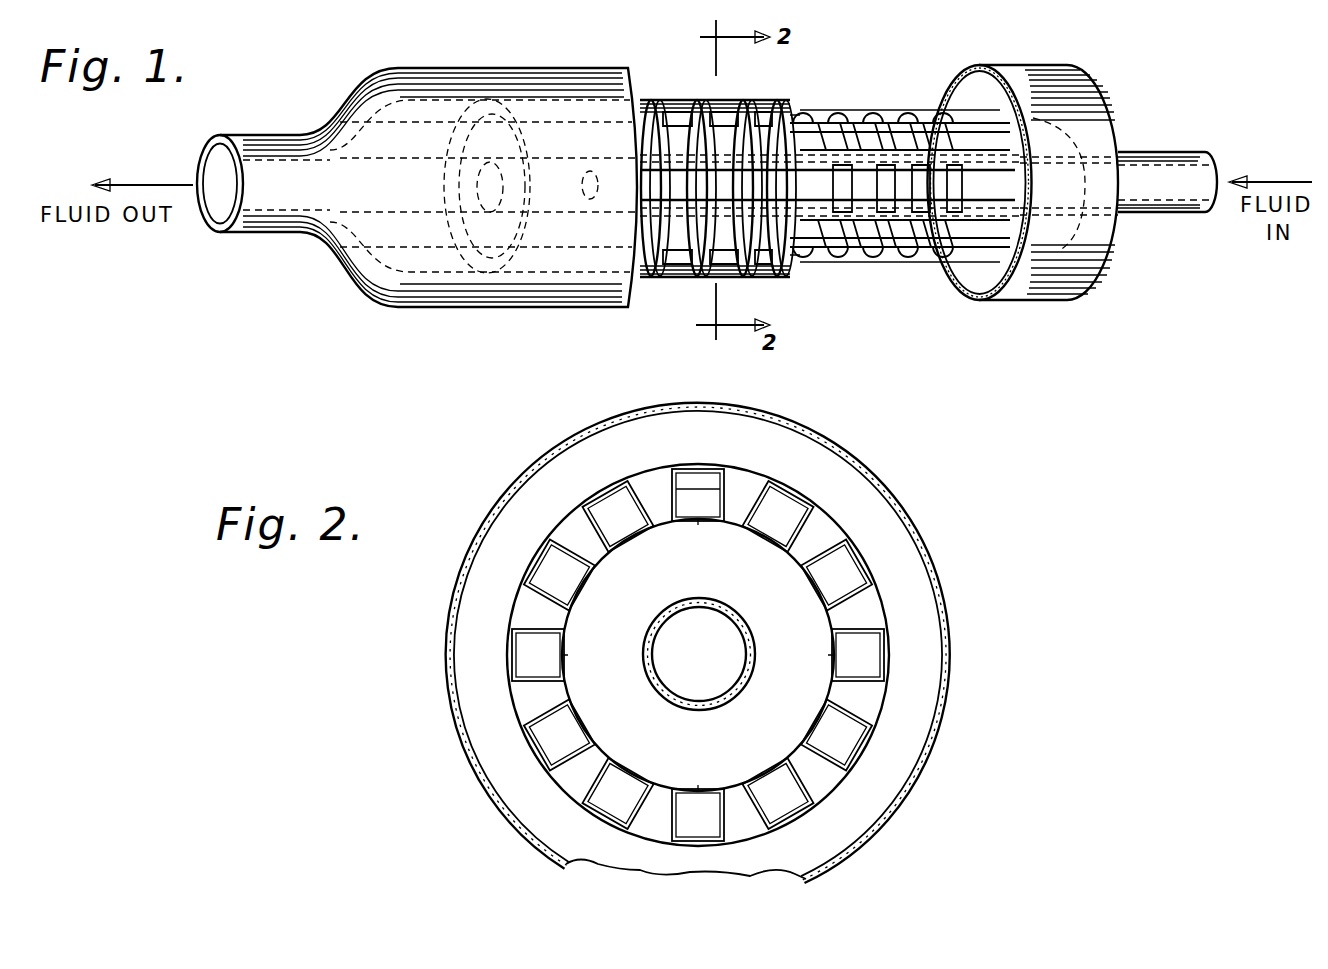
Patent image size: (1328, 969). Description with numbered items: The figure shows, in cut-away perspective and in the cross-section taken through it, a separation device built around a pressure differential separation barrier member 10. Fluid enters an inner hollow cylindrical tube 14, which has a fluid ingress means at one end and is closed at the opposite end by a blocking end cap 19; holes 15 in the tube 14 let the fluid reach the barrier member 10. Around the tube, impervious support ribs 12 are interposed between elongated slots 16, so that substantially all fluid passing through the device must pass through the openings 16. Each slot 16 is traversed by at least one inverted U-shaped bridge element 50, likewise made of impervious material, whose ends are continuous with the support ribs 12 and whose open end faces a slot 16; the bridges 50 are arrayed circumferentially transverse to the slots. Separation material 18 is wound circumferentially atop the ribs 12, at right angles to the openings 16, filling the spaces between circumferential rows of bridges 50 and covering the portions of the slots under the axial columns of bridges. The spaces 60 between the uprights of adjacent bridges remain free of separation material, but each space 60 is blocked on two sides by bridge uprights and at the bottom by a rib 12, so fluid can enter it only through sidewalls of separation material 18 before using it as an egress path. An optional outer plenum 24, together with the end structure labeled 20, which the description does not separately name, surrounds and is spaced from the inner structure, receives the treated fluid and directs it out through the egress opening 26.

In FIG. 1, the pressure differential separation barrier member 10 is at (823, 98).
In FIG. 1, the support rib 12 is at (853, 215).
In FIG. 2, the support rib 12 is at (830, 604).
In FIG. 1, the inner hollow cylindrical tube 14 is at (590, 158).
In FIG. 2, the inner hollow cylindrical tube 14 is at (653, 687).
In FIG. 1, the holes 15 is at (583, 195).
In FIG. 2, the holes 15 is at (758, 648).
In FIG. 1, the elongated slots 16 is at (980, 98).
In FIG. 2, the elongated slots 16 is at (693, 512).
In FIG. 1, the separation material 18 is at (758, 103).
In FIG. 2, the separation material 18 is at (645, 490).
In FIG. 1, the end cap 19 is at (480, 203).
In FIG. 1, the end cap 20 is at (977, 65).
In FIG. 2, the end cap 20 is at (563, 475).
In FIG. 1, the outer plenum 24 is at (1087, 88).
In FIG. 2, the outer plenum 24 is at (927, 545).
In FIG. 1, the egress opening 26 is at (215, 213).
In FIG. 1, the bridge element 50 is at (702, 108).
In FIG. 2, the bridge element 50 is at (503, 660).
In FIG. 1, the spaces 60 is at (765, 106).
In FIG. 2, the spaces 60 is at (523, 598).